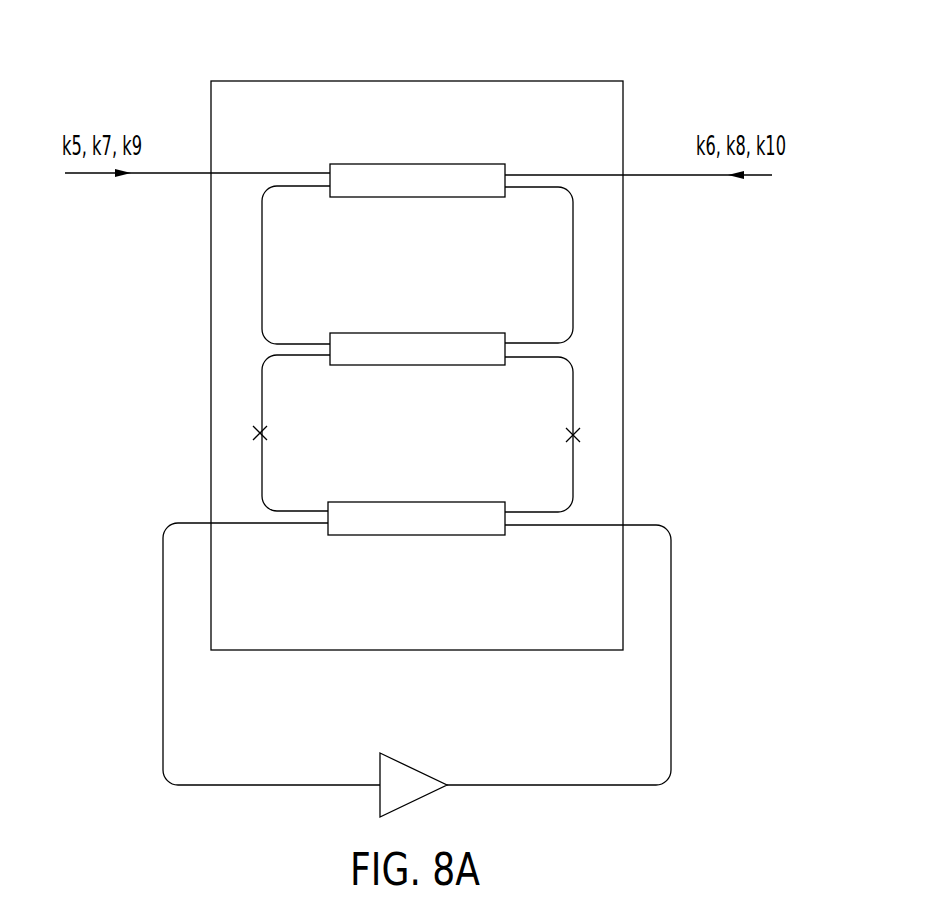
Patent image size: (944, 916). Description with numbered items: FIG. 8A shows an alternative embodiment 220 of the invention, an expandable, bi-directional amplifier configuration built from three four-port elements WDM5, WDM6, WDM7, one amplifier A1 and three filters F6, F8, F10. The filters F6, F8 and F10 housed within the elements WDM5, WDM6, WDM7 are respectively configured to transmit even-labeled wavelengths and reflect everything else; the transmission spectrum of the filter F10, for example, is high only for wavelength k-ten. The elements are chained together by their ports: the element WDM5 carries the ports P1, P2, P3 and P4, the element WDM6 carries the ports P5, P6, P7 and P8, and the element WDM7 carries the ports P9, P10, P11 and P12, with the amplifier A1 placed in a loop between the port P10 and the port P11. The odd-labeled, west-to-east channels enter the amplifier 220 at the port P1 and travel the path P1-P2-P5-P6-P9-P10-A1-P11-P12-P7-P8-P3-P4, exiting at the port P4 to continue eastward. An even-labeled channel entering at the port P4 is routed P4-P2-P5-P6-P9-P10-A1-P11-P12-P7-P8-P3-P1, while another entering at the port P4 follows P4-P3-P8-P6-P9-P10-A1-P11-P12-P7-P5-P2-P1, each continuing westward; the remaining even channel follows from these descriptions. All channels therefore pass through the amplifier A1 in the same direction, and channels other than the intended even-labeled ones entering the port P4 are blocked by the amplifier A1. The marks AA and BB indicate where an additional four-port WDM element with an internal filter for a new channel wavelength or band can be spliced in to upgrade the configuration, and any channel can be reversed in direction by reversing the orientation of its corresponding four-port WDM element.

The alternative embodiment amplifier 220 is at (683, 84).
The four-port WDM element WDM5 is at (417, 155).
The four-port WDM element WDM6 is at (417, 324).
The four-port WDM element WDM7 is at (416, 493).
The filter F6 is at (417, 180).
The filter F8 is at (417, 349).
The filter F10 is at (416, 518).
The port P1 is at (310, 172).
The port P2 is at (301, 188).
The port P3 is at (538, 189).
The port P4 is at (569, 173).
The port P5 is at (310, 342).
The port P6 is at (301, 357).
The port P7 is at (538, 359).
The port P8 is at (536, 342).
The port P9 is at (310, 510).
The port P10 is at (301, 526).
The port P11 is at (538, 527).
The port P12 is at (536, 511).
The splice mark AA is at (277, 434).
The splice mark BB is at (556, 434).
The amplifier A1 is at (383, 755).